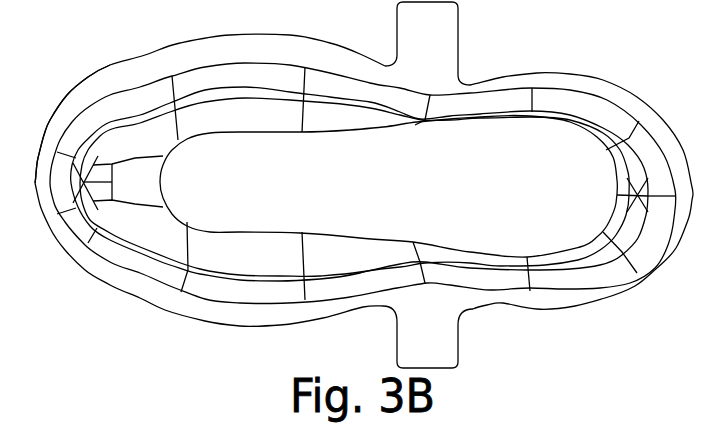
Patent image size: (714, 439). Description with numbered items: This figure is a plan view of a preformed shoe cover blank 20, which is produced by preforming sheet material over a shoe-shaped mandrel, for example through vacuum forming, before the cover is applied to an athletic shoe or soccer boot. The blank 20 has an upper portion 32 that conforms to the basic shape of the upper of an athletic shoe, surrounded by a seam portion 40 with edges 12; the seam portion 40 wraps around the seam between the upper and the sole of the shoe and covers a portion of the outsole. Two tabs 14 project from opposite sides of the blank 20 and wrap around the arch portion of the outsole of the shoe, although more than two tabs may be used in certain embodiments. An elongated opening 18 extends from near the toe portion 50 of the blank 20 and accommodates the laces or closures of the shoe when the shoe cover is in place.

The edges 12 is at (233, 58).
The tabs 14 is at (440, 31).
The opening 18 is at (357, 190).
The preformed shoe cover blank 20 is at (544, 55).
The upper portion 32 is at (312, 107).
The seam portion 40 is at (57, 117).
The toe portion 50 is at (115, 140).